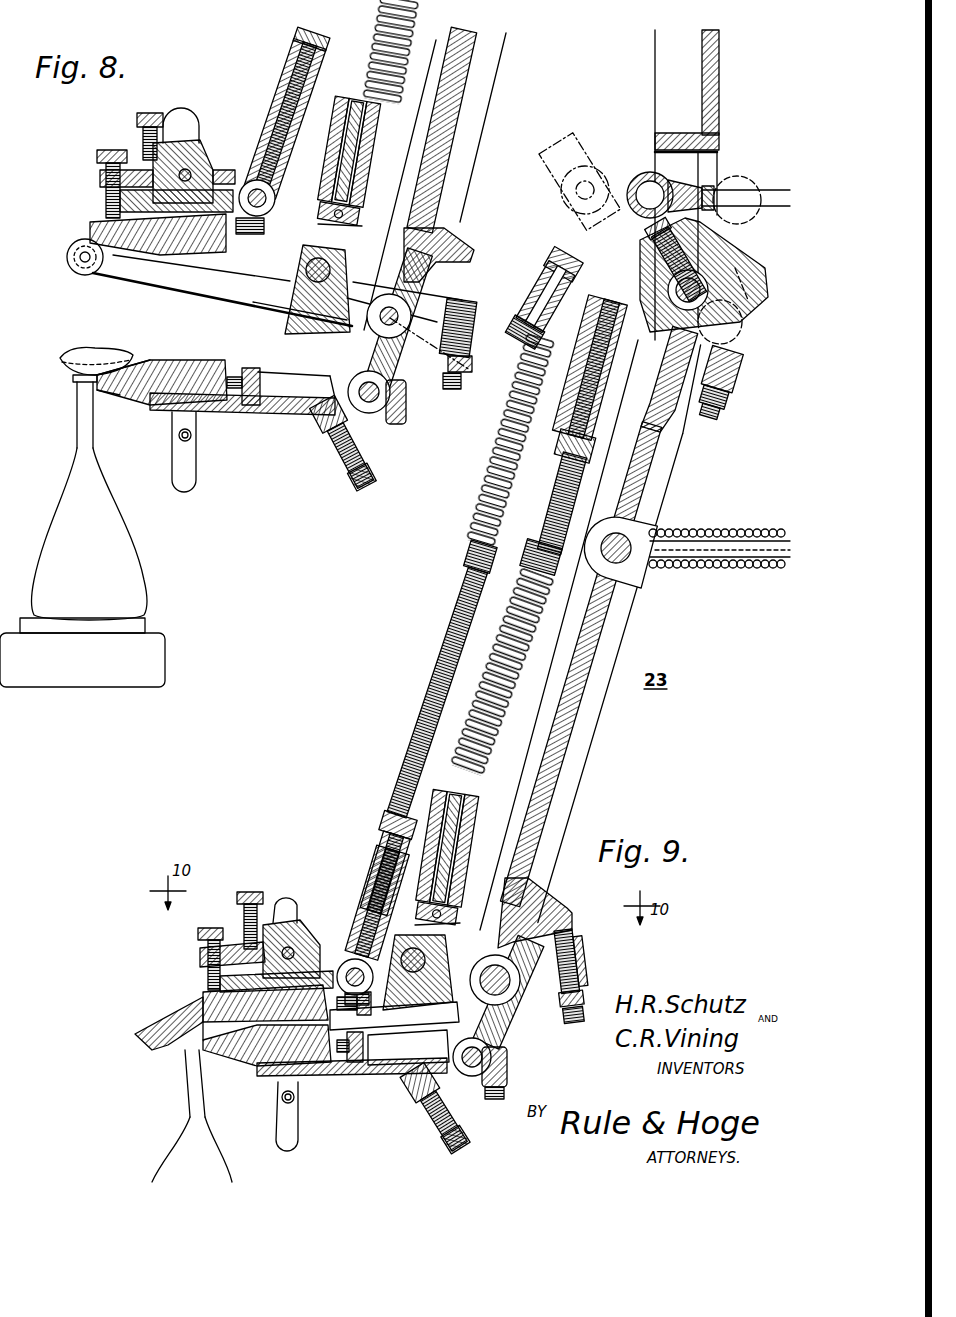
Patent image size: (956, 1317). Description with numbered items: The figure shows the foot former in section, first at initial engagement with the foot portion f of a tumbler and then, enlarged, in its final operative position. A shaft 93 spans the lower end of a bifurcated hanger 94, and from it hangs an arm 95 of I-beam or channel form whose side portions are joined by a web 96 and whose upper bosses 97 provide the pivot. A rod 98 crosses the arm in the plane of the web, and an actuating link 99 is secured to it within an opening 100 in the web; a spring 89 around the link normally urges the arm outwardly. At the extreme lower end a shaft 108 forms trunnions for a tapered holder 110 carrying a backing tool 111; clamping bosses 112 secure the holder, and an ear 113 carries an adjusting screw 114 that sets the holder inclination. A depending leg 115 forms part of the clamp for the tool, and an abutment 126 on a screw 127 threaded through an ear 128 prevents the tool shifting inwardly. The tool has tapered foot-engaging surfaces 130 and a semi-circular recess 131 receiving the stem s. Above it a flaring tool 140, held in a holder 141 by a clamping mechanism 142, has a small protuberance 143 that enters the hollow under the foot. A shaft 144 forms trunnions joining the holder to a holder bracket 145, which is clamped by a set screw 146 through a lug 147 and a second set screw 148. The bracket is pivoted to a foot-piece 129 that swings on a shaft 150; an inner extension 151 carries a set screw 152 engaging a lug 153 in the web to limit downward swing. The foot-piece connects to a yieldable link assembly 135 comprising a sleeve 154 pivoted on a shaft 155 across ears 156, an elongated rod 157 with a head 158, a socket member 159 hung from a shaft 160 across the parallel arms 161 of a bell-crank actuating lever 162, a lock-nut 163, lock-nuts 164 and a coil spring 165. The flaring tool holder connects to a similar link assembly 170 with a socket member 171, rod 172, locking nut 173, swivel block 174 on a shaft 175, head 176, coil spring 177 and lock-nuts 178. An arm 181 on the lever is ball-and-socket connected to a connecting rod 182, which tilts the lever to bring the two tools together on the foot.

In FIG. 9, the spring 89 is at (748, 568).
In FIG. 9, the shaft 93 is at (714, 280).
In FIG. 9, the bifurcated hanger 94 is at (719, 143).
In FIG. 8, the arm 95 is at (472, 166).
In FIG. 9, the arm 95 is at (585, 756).
In FIG. 8, the web 96 is at (470, 126).
In FIG. 9, the web 96 is at (605, 660).
In FIG. 9, the bosses 97 is at (740, 275).
In FIG. 9, the rod 98 is at (628, 568).
In FIG. 9, the actuating link 99 is at (717, 562).
In FIG. 9, the opening 100 is at (648, 522).
In FIG. 9, the shaft 108 is at (505, 1075).
In FIG. 8, the holder 110 is at (276, 413).
In FIG. 9, the holder 110 is at (352, 1076).
In FIG. 8, the backing tool 111 is at (186, 360).
In FIG. 9, the backing tool 111 is at (252, 1068).
In FIG. 8, the clamping bosses 112 is at (400, 420).
In FIG. 9, the clamping bosses 112 is at (486, 1088).
In FIG. 9, the ear 113 is at (415, 1092).
In FIG. 8, the adjusting screw 114 is at (350, 470).
In FIG. 9, the adjusting screw 114 is at (456, 1136).
In FIG. 8, the depending leg 115 is at (226, 466).
In FIG. 9, the depending leg 115 is at (297, 1122).
In FIG. 8, the abutment 126 is at (242, 376).
In FIG. 9, the abutment 126 is at (347, 1024).
In FIG. 8, the screw 127 is at (262, 376).
In FIG. 9, the screw 127 is at (345, 1068).
In FIG. 8, the ear 128 is at (275, 371).
In FIG. 9, the ear 128 is at (376, 1046).
In FIG. 8, the jaw plate 129 is at (172, 288).
In FIG. 9, the jaw plate 129 is at (425, 1012).
In FIG. 8, the foot-engaging surfaces 130 is at (155, 358).
In FIG. 9, the foot-engaging surfaces 130 is at (247, 1062).
In FIG. 8, the semi-circular recess 131 is at (100, 385).
In FIG. 8, the link assembly 135 is at (378, 84).
In FIG. 9, the link assembly 135 is at (447, 778).
In FIG. 8, the flaring tool 140 is at (100, 228).
In FIG. 9, the flaring tool 140 is at (195, 998).
In FIG. 8, the holder 141 is at (208, 170).
In FIG. 9, the holder 141 is at (312, 955).
In FIG. 8, the clamping mechanism 142 is at (202, 134).
In FIG. 9, the clamping mechanism 142 is at (298, 902).
In FIG. 8, the protuberance 143 is at (100, 262).
In FIG. 9, the protuberance 143 is at (276, 981).
In FIG. 8, the shaft 144 is at (272, 208).
In FIG. 9, the shaft 144 is at (348, 942).
In FIG. 8, the holder bracket 145 is at (115, 215).
In FIG. 9, the holder bracket 145 is at (200, 960).
In FIG. 8, the set screw 146 is at (177, 104).
In FIG. 9, the set screw 146 is at (270, 880).
In FIG. 8, the lug 147 is at (188, 128).
In FIG. 9, the lug 147 is at (288, 953).
In FIG. 8, the second set screw 148 is at (112, 150).
In FIG. 9, the second set screw 148 is at (210, 930).
In FIG. 8, the shaft 150 is at (424, 330).
In FIG. 9, the shaft 150 is at (516, 1000).
In FIG. 8, the inner extension 151 is at (430, 306).
In FIG. 9, the inner extension 151 is at (525, 1002).
In FIG. 8, the set screw 152 is at (454, 390).
In FIG. 9, the set screw 152 is at (577, 1022).
In FIG. 8, the lug 153 is at (455, 246).
In FIG. 9, the lug 153 is at (588, 897).
In FIG. 8, the sleeve 154 is at (360, 142).
In FIG. 9, the sleeve 154 is at (490, 850).
In FIG. 8, the shaft 155 is at (340, 234).
In FIG. 9, the shaft 155 is at (445, 939).
In FIG. 8, the ears 156 is at (305, 262).
In FIG. 9, the ears 156 is at (468, 931).
In FIG. 8, the elongated rod 157 is at (385, 118).
In FIG. 9, the elongated rod 157 is at (478, 808).
In FIG. 8, the head 158 is at (352, 216).
In FIG. 9, the head 158 is at (478, 900).
In FIG. 9, the socket member 159 is at (578, 372).
In FIG. 9, the shaft 160 is at (652, 250).
In FIG. 9, the parallel arms 161 is at (530, 305).
In FIG. 9, the actuating lever 162 is at (758, 290).
In FIG. 9, the lock-nut 163 is at (562, 455).
In FIG. 9, the lock-nuts 164 is at (536, 544).
In FIG. 9, the coil spring 165 is at (732, 373).
In FIG. 9, the link assembly 170 is at (420, 700).
In FIG. 9, the socket member 171 is at (377, 848).
In FIG. 9, the rod 172 is at (440, 655).
In FIG. 9, the locking nut 173 is at (390, 814).
In FIG. 9, the swivel block 174 is at (520, 332).
In FIG. 9, the shaft 175 is at (548, 264).
In FIG. 9, the head 176 is at (566, 214).
In FIG. 9, the coil spring 177 is at (496, 434).
In FIG. 9, the lock-nuts 178 is at (470, 552).
In FIG. 9, the arm 181 is at (642, 205).
In FIG. 9, the connecting rod 182 is at (760, 189).
In FIG. 8, the foot portion f is at (90, 370).
In FIG. 9, the foot portion f is at (150, 1027).
In FIG. 8, the stem s is at (90, 434).
In FIG. 9, the stem s is at (185, 1092).
In FIG. 8, the glass article A is at (125, 570).
In FIG. 9, the glass article A is at (213, 1173).